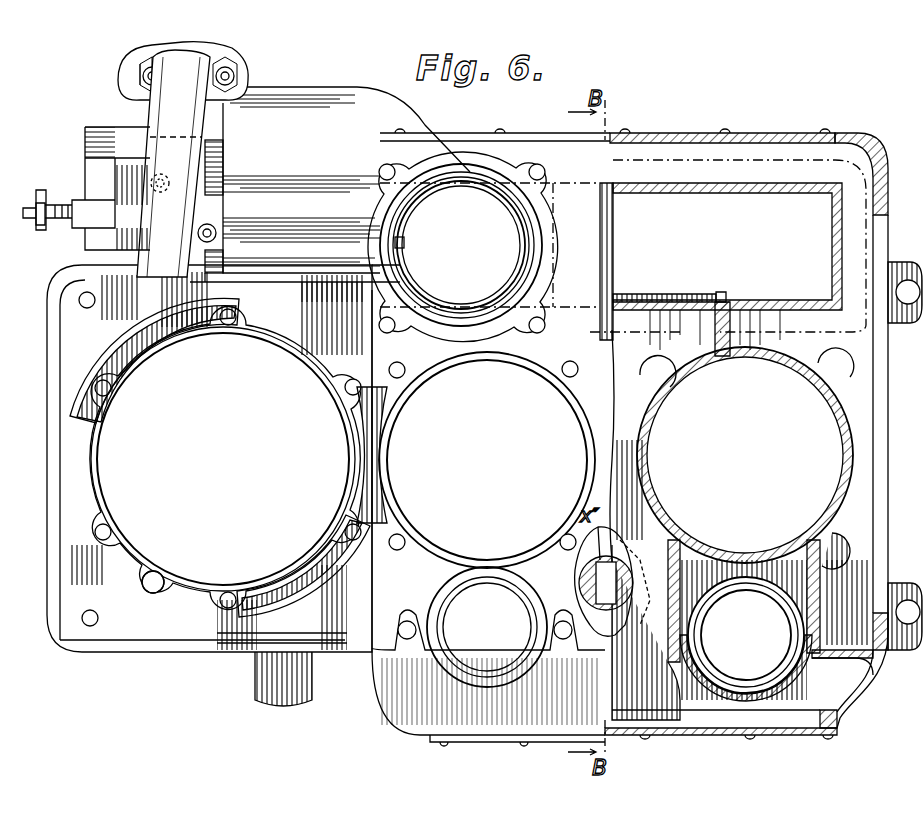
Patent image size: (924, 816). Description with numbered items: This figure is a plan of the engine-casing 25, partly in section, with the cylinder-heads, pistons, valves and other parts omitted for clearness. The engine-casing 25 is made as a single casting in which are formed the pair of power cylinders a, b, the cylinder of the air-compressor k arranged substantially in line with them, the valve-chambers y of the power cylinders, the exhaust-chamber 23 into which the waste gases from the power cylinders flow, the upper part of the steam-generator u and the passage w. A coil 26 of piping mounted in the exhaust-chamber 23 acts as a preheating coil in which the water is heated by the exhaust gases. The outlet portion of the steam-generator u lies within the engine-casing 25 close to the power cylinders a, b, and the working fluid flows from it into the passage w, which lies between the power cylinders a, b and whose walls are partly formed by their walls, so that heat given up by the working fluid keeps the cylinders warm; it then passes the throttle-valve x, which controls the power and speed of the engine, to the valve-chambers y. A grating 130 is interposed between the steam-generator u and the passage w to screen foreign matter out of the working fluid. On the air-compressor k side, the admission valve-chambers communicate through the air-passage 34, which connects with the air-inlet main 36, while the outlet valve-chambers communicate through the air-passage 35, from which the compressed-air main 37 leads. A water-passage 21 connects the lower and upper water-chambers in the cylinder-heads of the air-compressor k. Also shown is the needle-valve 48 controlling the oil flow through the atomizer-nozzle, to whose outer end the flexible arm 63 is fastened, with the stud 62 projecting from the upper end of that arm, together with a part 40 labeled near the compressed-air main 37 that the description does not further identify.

The water-passage 21 is at (155, 587).
The exhaust-chamber 23 is at (489, 235).
The engine-casing 25 is at (330, 194).
The coil 26 is at (516, 270).
The air-passage 34 is at (333, 568).
The air-passage 35 is at (193, 330).
The air-inlet main 36 is at (280, 690).
The compressed-air main 37 is at (183, 159).
The pivot bolt 40 is at (216, 238).
The needle-valve 48 is at (70, 178).
The stud 62 is at (30, 218).
The flexible arm 63 is at (40, 230).
The grating 130 is at (660, 280).
The power cylinder a is at (732, 449).
The power cylinder b is at (488, 505).
The air-compressor k is at (217, 458).
The steam-generator u is at (634, 381).
The passage w is at (701, 329).
The throttle-valve x is at (582, 580).
The valve-chamber y is at (623, 620).